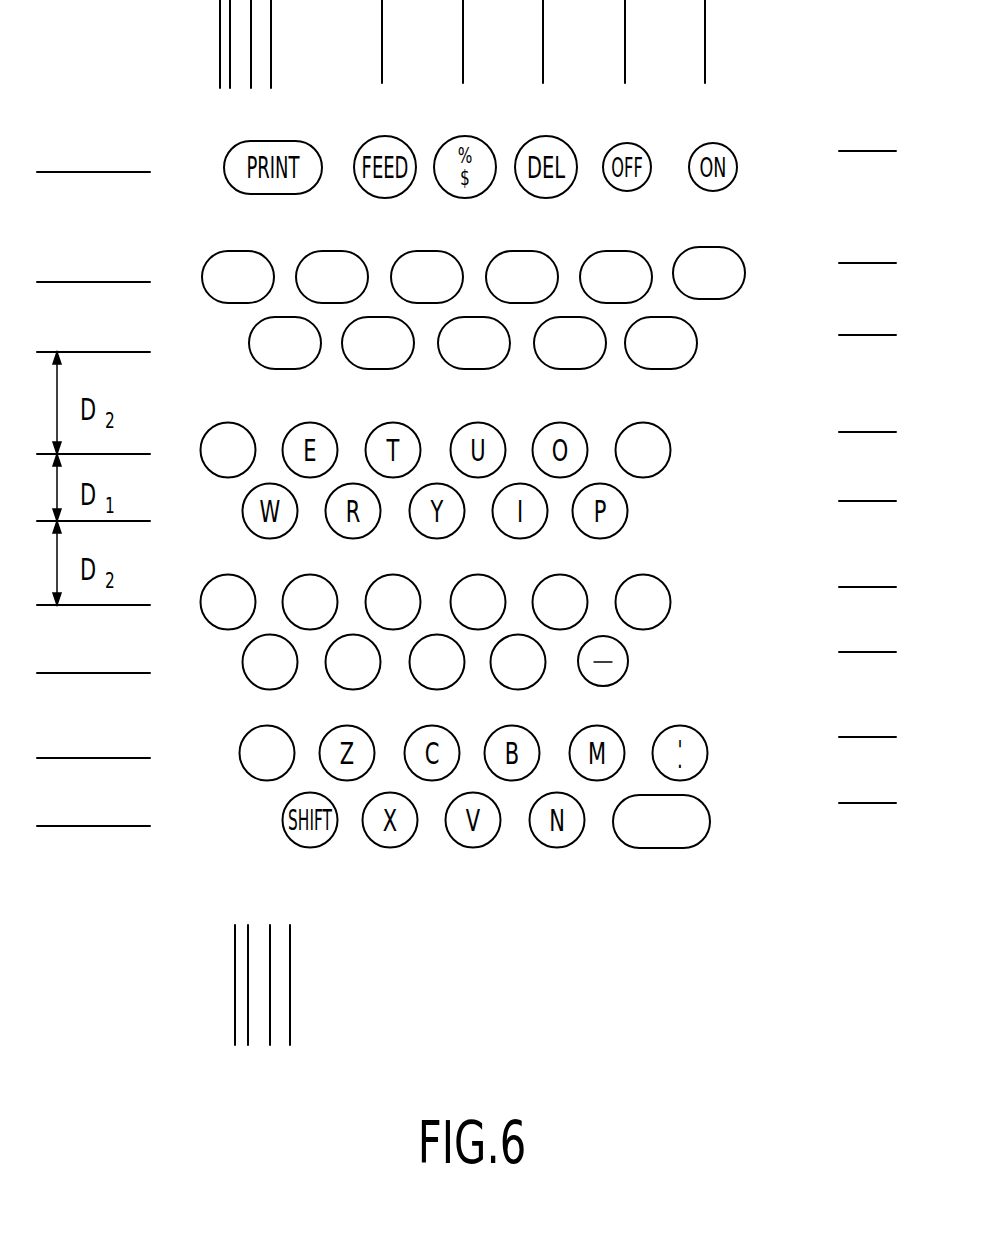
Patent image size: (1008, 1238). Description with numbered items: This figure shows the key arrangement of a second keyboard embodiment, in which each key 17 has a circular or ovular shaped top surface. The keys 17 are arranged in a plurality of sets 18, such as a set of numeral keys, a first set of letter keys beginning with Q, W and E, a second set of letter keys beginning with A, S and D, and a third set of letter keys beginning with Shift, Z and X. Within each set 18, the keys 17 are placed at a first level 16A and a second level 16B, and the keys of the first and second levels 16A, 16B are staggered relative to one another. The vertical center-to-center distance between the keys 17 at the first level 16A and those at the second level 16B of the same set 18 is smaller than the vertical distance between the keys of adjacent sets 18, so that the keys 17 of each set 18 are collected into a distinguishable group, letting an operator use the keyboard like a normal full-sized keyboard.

The first level 16A is at (660, 575).
The second level 16B is at (710, 815).
The key 17 is at (697, 248).
The set 18 is at (193, 240).